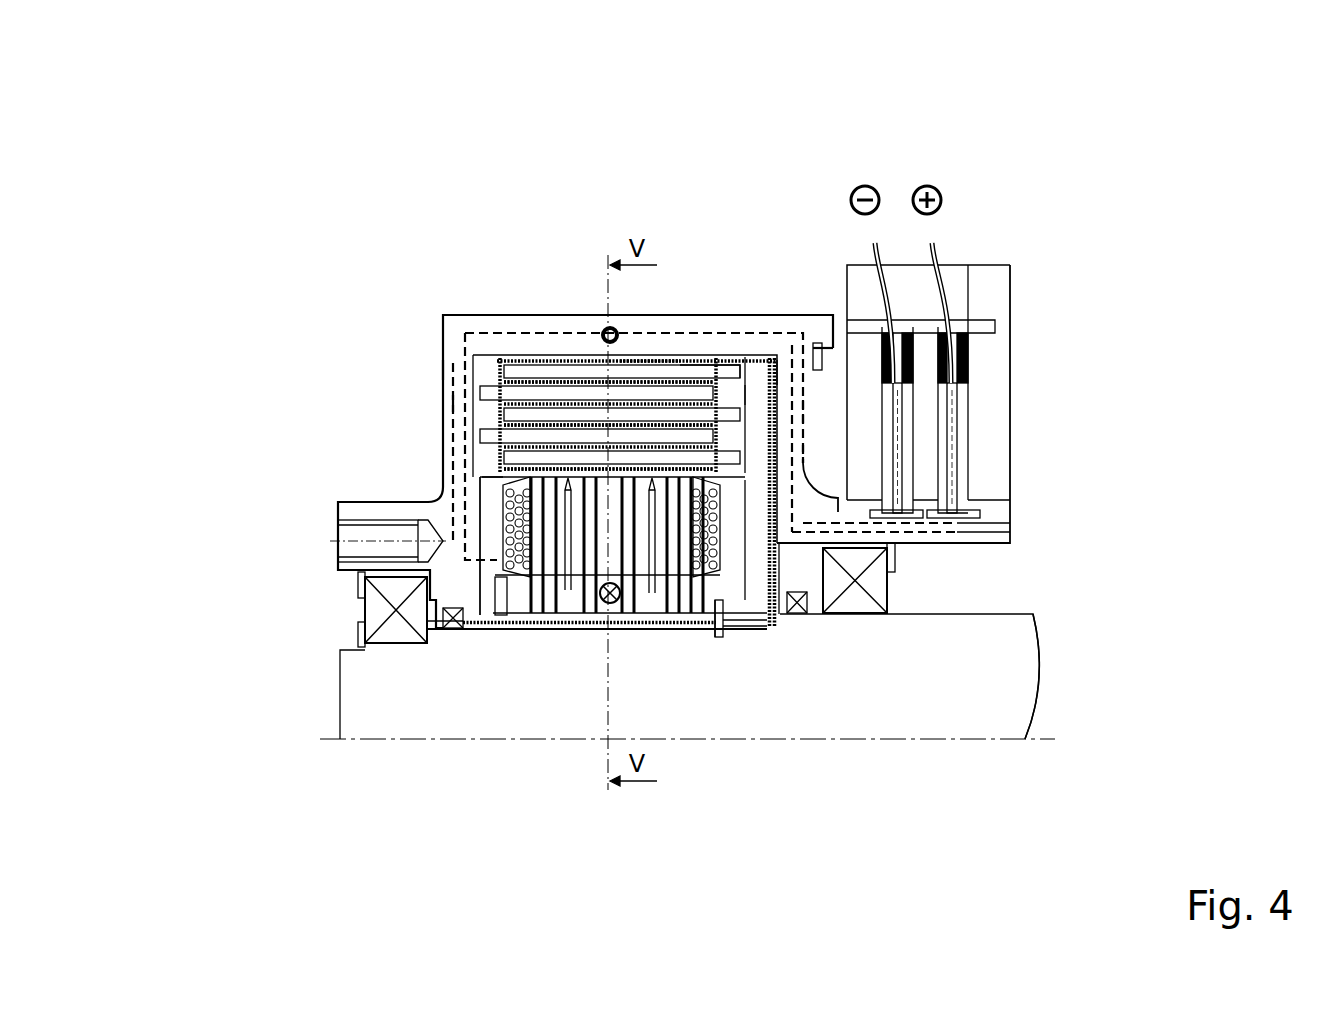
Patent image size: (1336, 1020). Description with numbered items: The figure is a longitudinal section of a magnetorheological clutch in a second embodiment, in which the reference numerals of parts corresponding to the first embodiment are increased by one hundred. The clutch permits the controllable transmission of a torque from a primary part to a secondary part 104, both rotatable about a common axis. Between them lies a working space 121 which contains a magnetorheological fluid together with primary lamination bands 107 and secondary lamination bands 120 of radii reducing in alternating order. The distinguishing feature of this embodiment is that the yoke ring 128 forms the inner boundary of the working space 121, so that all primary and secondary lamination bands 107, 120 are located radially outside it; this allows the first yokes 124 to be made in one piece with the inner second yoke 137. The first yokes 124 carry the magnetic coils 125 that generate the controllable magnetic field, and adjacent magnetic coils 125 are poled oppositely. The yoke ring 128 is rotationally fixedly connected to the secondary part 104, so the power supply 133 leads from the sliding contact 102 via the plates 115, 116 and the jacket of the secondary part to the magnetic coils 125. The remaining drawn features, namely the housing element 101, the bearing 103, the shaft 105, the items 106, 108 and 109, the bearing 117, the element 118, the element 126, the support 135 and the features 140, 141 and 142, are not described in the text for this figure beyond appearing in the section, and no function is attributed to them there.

The plug connector 101 is at (1033, 352).
The sliding contact 102 is at (960, 487).
The bearing 103 is at (440, 672).
The secondary part 104 is at (447, 368).
The shaft 105 is at (1015, 660).
The electrical lead 106 is at (778, 372).
The primary lamination band 107 is at (700, 372).
The terminal 108 is at (755, 395).
The shaft end 109 is at (1017, 738).
The plate 115 is at (810, 458).
The plate 116 is at (450, 403).
The bearing 117 is at (850, 598).
The heat sink plate 118 is at (490, 395).
The secondary lamination band 120 is at (577, 395).
The working space 121 is at (633, 425).
The first yoke 124 is at (559, 545).
The magnetic coil 125 is at (502, 510).
The plate stack 126 is at (510, 463).
The yoke ring 128 is at (731, 546).
The power supply 133 is at (803, 412).
The support wall 135 is at (508, 485).
The inner second yoke 137 is at (697, 595).
The contact 140 is at (645, 365).
The screw 141 is at (610, 328).
The fastening screw 142 is at (610, 603).